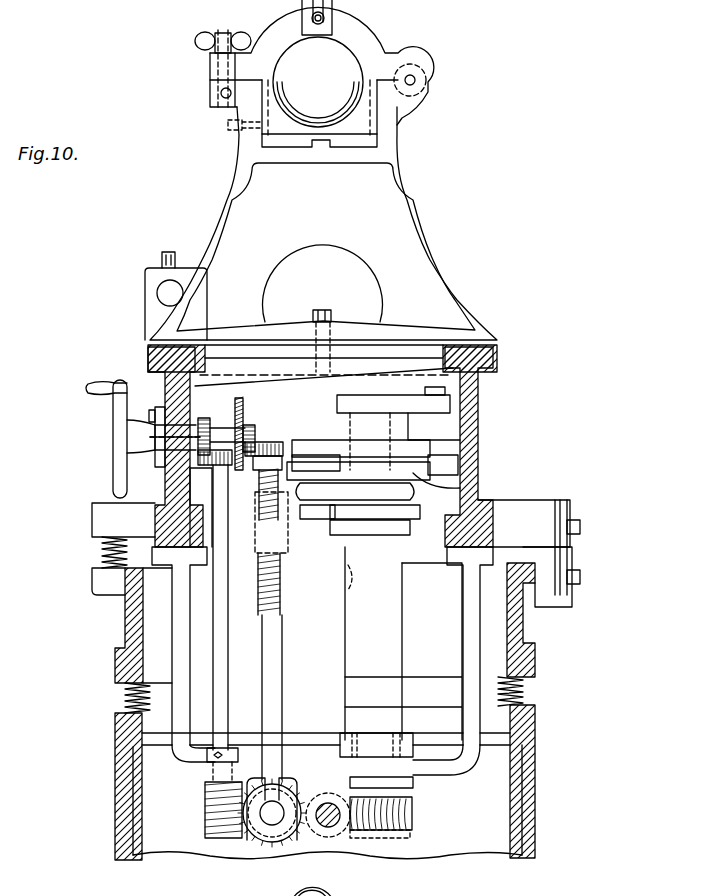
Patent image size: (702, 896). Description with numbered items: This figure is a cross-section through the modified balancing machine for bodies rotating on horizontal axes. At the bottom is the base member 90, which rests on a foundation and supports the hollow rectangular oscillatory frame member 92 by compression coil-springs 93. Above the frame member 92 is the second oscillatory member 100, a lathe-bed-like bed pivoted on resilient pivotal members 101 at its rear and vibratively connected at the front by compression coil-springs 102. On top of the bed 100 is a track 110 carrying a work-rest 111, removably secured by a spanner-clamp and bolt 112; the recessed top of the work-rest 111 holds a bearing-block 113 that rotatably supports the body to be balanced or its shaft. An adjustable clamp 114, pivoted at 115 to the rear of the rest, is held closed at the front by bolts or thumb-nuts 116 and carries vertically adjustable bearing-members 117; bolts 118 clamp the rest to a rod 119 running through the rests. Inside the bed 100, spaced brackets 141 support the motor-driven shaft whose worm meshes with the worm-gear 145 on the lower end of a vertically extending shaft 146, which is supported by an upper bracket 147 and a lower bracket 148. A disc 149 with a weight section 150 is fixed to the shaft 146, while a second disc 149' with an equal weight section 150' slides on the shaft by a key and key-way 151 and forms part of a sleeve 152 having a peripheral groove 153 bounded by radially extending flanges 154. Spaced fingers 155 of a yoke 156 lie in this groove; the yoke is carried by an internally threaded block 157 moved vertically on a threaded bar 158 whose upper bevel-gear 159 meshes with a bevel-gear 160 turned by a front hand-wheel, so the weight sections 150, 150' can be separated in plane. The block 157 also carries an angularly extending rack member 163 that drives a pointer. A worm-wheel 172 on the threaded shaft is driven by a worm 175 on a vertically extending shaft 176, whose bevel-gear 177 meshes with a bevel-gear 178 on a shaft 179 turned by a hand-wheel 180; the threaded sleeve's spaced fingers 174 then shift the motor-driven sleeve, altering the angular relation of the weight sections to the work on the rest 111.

The base member 90 is at (118, 799).
The hollow rectangular oscillatory frame member 92 is at (458, 643).
The compression coil-springs 93 is at (524, 689).
The second oscillatory member 100 is at (470, 420).
The resilient pivotal members 101 is at (574, 553).
The compression coil-springs 102 is at (103, 545).
The track 110 is at (150, 344).
The work-rest 111 is at (334, 217).
The spanner-clamp and bolt 112 is at (349, 368).
The bearing-block 113 is at (365, 122).
The adjustable clamp 114 is at (360, 42).
The pivotal connection 115 is at (416, 80).
The bolts or thumb-nuts 116 is at (207, 44).
The vertically adjustable bearing-members 117 is at (324, 30).
The bolts 118 is at (180, 250).
The rod 119 is at (164, 293).
The brackets 141 is at (190, 766).
The worm-gear 145 is at (413, 817).
The vertically extending shaft 146 is at (400, 657).
The upper bracket 147 is at (437, 402).
The lower bracket 148 is at (281, 748).
The disc 149 is at (409, 443).
The second disc 149' is at (472, 485).
The weight section 150 is at (406, 466).
The weight section 150' is at (315, 442).
The key and key-way 151 is at (338, 599).
The sleeve 152 is at (355, 494).
The peripheral groove 153 is at (352, 574).
The radially extending flanges 154 is at (415, 516).
The spaced fingers 155 is at (385, 530).
The yoke 156 is at (323, 513).
The block 157 is at (288, 540).
The threaded bar 158 is at (271, 627).
The bevel-gear 159 is at (265, 443).
The bevel-gear 160 is at (250, 425).
The angularly extending rack member 163 is at (222, 402).
The worm-wheel 172 is at (270, 846).
The spaced fingers 174 is at (313, 842).
The worm 175 is at (208, 800).
The vertically extending shaft 176 is at (220, 599).
The bevel-gear 177 is at (205, 472).
The bevel-gear 178 is at (167, 470).
The shaft 179 is at (113, 424).
The hand-wheel 180 is at (118, 468).